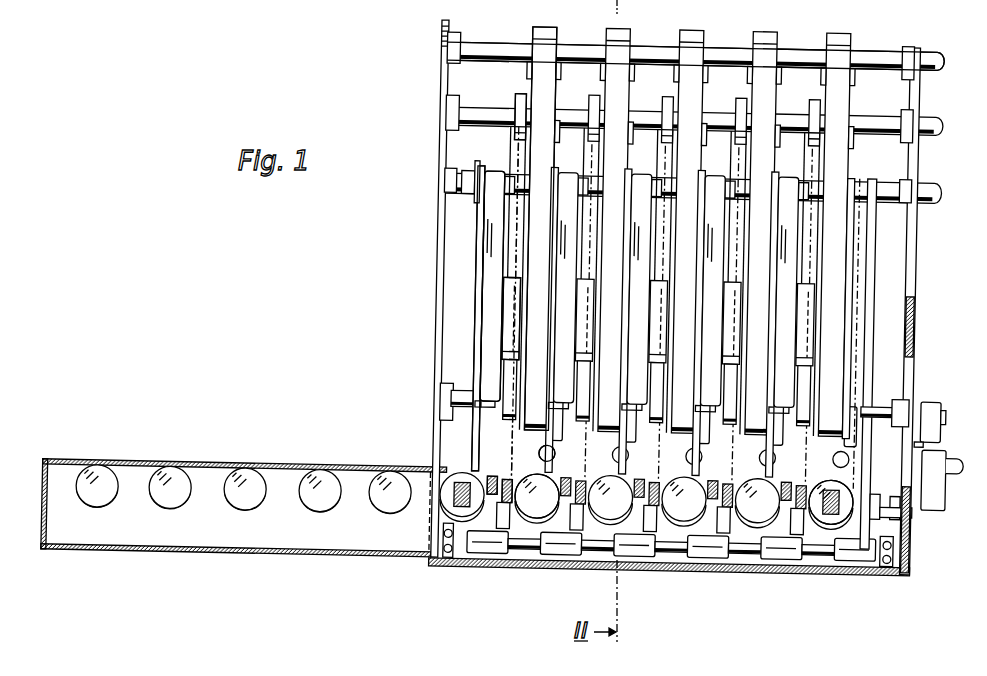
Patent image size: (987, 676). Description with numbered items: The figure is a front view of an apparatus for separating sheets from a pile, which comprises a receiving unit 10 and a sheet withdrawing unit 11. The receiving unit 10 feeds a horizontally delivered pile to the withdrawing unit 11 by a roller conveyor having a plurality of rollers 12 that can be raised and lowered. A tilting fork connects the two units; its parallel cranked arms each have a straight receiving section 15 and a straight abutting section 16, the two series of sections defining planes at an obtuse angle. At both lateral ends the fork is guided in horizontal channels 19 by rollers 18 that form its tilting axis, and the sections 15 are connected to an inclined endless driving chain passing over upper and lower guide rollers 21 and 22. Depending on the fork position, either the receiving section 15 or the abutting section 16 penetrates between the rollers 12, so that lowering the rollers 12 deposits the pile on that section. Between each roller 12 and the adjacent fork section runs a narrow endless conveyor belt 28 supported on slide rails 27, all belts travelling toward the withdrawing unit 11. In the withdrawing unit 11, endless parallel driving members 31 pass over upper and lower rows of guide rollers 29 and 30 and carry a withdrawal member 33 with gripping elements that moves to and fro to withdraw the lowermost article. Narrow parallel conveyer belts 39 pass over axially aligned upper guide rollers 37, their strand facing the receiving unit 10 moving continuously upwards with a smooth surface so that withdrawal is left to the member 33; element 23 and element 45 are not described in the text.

The receiving unit 10 is at (357, 461).
The sheet withdrawing unit 11 is at (435, 301).
The rollers 12 is at (112, 518).
The receiving section 15 is at (494, 233).
The abutting section 16 is at (569, 497).
The rollers 18 is at (460, 552).
The horizontal channels 19 is at (455, 553).
The upper guide rollers 21 is at (480, 160).
The lower guide rollers 22 is at (468, 480).
The push rod 23 is at (484, 264).
The slide rails 27 is at (519, 479).
The endless conveyor belt 28 is at (504, 476).
The upper guide rollers 29 is at (520, 93).
The lower guide rollers 30 is at (521, 420).
The endless parallel driving members 31 is at (521, 150).
The withdrawal member 33 is at (517, 316).
The upper guide rollers 37 is at (557, 33).
The conveyer belts 39 is at (547, 80).
The ball holder 45 is at (839, 479).